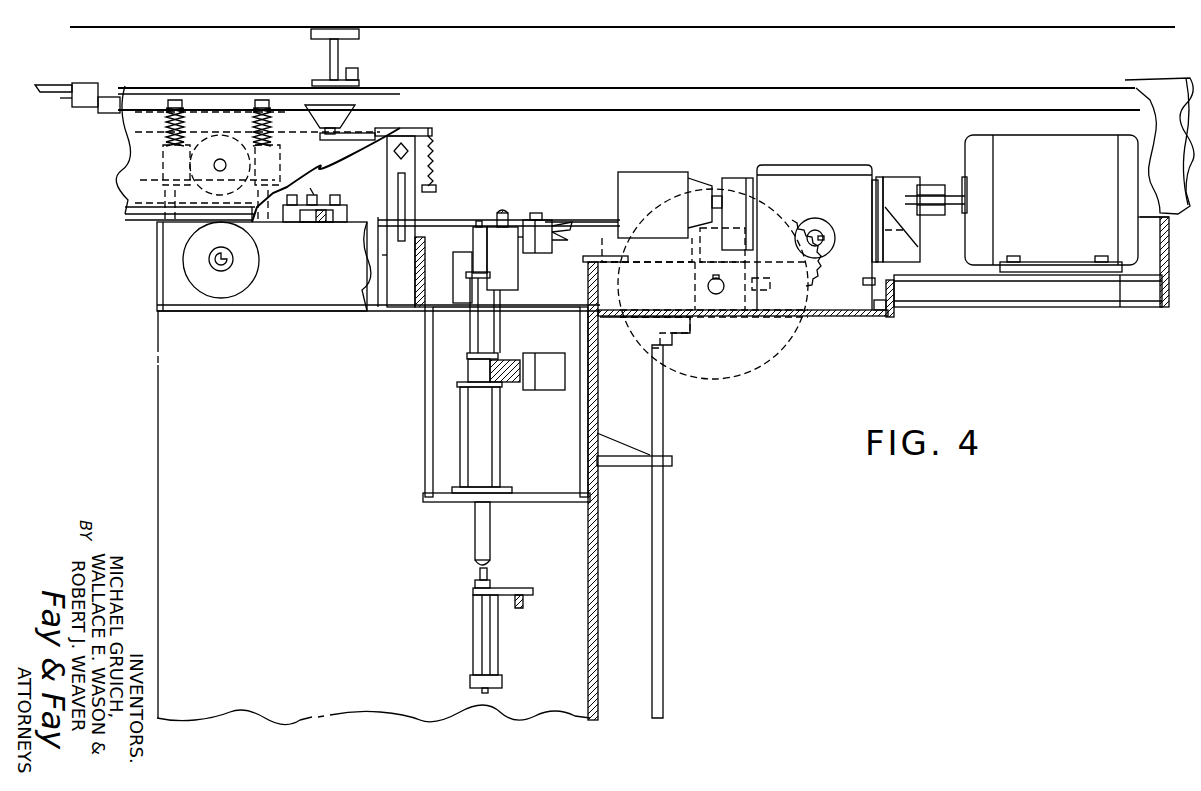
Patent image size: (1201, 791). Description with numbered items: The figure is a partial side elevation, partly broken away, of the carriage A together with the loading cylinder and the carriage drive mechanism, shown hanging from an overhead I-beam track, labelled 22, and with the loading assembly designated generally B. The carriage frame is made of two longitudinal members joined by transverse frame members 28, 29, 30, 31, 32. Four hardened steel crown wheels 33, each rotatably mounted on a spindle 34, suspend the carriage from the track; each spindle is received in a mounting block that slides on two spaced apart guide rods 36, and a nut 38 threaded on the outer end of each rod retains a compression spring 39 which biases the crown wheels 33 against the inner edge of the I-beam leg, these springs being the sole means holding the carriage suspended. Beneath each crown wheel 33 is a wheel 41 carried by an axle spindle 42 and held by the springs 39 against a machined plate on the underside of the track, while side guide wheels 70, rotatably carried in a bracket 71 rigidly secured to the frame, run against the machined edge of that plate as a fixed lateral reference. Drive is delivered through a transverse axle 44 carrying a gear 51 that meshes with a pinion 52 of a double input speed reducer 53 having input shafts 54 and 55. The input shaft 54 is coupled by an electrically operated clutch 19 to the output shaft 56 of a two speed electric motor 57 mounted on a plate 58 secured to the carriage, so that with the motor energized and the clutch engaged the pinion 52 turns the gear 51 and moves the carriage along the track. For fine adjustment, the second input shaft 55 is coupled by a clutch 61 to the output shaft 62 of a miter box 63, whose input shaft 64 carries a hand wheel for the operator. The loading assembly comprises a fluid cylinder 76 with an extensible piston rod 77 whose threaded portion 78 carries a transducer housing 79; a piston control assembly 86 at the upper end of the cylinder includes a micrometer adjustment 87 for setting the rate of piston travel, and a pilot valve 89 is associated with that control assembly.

The overhead rail 22 is at (340, 33).
The nut 38 is at (185, 102).
The crown wheel 33 is at (225, 128).
The compression spring 39 is at (135, 132).
The spindle 34 is at (230, 160).
The guide rod 36 is at (170, 175).
The bracket 71 is at (305, 195).
The side guide wheel 70 is at (332, 212).
The axle spindle 42 is at (240, 260).
The wheel 41 is at (240, 285).
The transverse frame member 32 is at (153, 282).
The transverse frame member 31 is at (402, 310).
The micrometer adjustment 87 is at (502, 210).
The piston control assembly 86 is at (526, 210).
The pilot valve 89 is at (560, 220).
The transverse frame member 30 is at (588, 278).
The miter box 63 is at (640, 175).
The output shaft 62 is at (712, 190).
The clutch 61 is at (732, 185).
The speed reducer 53 is at (780, 170).
The input shaft 55 is at (765, 200).
The input shaft 54 is at (872, 205).
The electrically operated clutch 19 is at (905, 185).
The output shaft 56 is at (955, 195).
The two speed electric motor 57 is at (1060, 140).
The transverse axle 44 is at (722, 294).
The pinion 52 is at (806, 262).
The transverse frame member 29 is at (893, 298).
The plate 58 is at (958, 278).
The transverse frame member 28 is at (1166, 280).
The gear 51 is at (775, 390).
The shaft 64 is at (665, 425).
The fluid cylinder 76 is at (490, 430).
The piston rod 77 is at (478, 538).
The threaded portion 78 is at (490, 565).
The transducer housing 79 is at (475, 625).
The carriage A is at (95, 290).
The lift assembly B is at (440, 370).